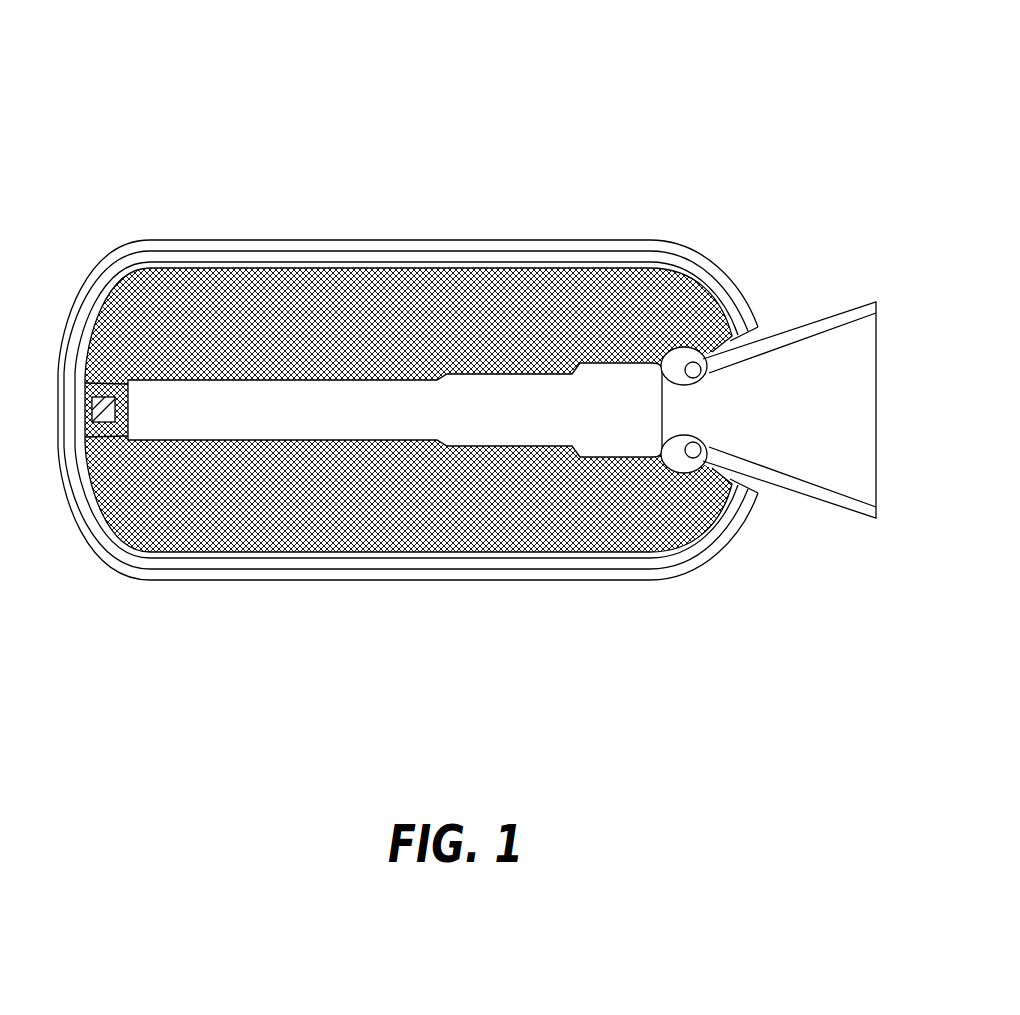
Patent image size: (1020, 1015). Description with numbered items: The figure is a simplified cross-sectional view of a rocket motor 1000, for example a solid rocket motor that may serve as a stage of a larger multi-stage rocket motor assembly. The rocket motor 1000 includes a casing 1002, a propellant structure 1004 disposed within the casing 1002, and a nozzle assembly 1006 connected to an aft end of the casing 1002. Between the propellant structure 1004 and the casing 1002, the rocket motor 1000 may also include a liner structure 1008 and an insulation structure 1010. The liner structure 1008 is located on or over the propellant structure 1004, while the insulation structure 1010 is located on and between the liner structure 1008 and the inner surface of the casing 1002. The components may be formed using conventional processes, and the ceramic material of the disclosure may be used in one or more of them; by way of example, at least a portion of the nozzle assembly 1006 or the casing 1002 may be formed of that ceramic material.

The rocket motor 1000 is at (509, 193).
The casing 1002 is at (142, 240).
The propellant structure 1004 is at (468, 535).
The nozzle assembly 1006 is at (818, 320).
The liner structure 1008 is at (329, 262).
The insulation structure 1010 is at (257, 250).